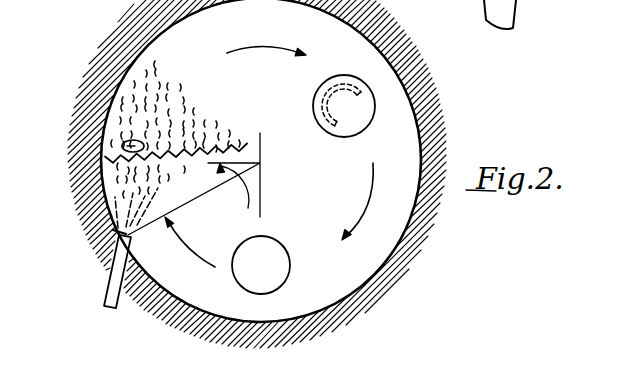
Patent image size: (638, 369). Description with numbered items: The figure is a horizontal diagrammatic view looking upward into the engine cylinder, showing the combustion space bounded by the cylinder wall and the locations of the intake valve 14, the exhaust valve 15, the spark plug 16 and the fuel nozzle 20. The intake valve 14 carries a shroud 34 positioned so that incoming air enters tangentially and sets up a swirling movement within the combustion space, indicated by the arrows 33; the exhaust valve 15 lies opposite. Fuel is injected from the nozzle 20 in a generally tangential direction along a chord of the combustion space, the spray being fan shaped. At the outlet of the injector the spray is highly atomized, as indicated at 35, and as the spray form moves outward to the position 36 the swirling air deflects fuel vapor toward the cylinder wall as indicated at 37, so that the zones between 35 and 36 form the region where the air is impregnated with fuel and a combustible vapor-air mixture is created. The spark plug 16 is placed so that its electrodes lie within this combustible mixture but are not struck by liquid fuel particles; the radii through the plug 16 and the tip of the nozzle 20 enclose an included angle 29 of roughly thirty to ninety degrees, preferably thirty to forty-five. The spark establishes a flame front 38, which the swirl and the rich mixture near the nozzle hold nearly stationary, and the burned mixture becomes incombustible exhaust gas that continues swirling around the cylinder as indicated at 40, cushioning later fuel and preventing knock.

The intake valve 14 is at (372, 121).
The exhaust valve 15 is at (276, 291).
The spark plug 16 is at (123, 142).
The nozzle 20 is at (109, 287).
The included angle 29 is at (194, 184).
The arrows 33 is at (250, 47).
The shroud 34 is at (363, 92).
The zone of atomized spray 35 is at (113, 232).
The spray form position 36 is at (115, 183).
The deflected fuel vapor 37 is at (105, 160).
The flame front 38 is at (122, 150).
The swirling exhaust gases 40 is at (168, 66).